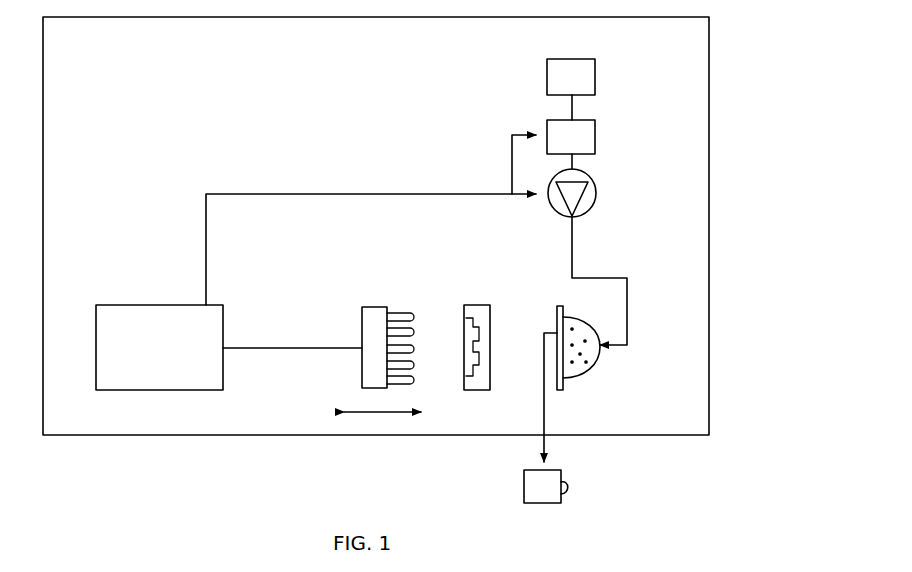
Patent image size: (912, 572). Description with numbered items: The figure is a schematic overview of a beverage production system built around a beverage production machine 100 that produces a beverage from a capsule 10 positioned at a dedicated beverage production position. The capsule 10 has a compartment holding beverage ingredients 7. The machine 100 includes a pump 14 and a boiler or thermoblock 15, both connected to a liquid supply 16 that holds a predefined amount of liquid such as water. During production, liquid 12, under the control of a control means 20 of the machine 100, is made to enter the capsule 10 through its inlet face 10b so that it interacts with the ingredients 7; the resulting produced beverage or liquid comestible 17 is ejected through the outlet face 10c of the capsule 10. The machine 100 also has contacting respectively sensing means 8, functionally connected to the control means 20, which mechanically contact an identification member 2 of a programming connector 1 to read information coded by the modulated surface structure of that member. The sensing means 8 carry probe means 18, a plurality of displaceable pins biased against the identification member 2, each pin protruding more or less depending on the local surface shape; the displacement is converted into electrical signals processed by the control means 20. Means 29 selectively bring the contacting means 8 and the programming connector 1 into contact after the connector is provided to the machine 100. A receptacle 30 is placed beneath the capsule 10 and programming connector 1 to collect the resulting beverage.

The beverage production machine 100 is at (700, 30).
The programming connector 1 is at (494, 317).
The identification member 2 is at (478, 362).
The beverage ingredients 7 is at (580, 330).
The contacting respectively sensing means 8 is at (360, 320).
The capsule 10 is at (581, 368).
The inlet face 10b is at (590, 372).
The outlet face 10c is at (557, 315).
The liquid 12 is at (576, 252).
The pump 14 is at (597, 196).
The boiler or thermoblock 15 is at (588, 137).
The liquid supply 16 is at (588, 78).
The produced beverage or liquid comestible 17 is at (544, 412).
The probe means 18 is at (400, 312).
The control means 20 is at (170, 359).
The means for selectively bringing into contact 29 is at (383, 417).
The receptacle 30 is at (541, 505).